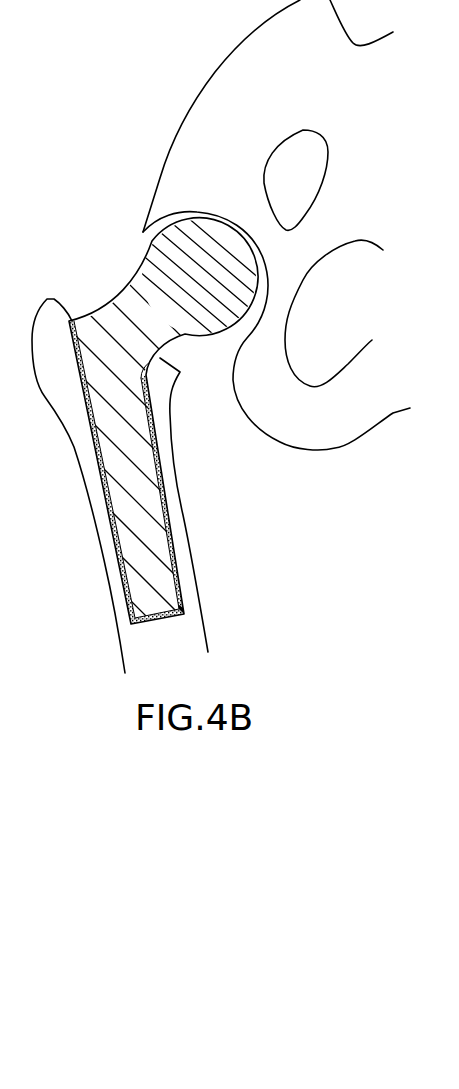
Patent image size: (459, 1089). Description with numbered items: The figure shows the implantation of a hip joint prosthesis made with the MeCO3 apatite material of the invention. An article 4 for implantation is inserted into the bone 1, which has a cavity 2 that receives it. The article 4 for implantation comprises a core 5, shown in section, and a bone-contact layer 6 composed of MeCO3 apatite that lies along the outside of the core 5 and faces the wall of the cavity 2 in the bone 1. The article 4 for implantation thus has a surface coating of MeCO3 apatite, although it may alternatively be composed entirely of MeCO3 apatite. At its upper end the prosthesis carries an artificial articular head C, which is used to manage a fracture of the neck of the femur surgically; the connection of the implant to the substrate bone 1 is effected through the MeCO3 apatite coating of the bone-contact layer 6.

The bone 1 is at (50, 377).
The cavity 2 is at (170, 520).
The article for implantation 4 is at (165, 420).
The core 5 is at (127, 498).
The bone-contact layer 6 is at (163, 618).
The artificial articular head C is at (198, 328).